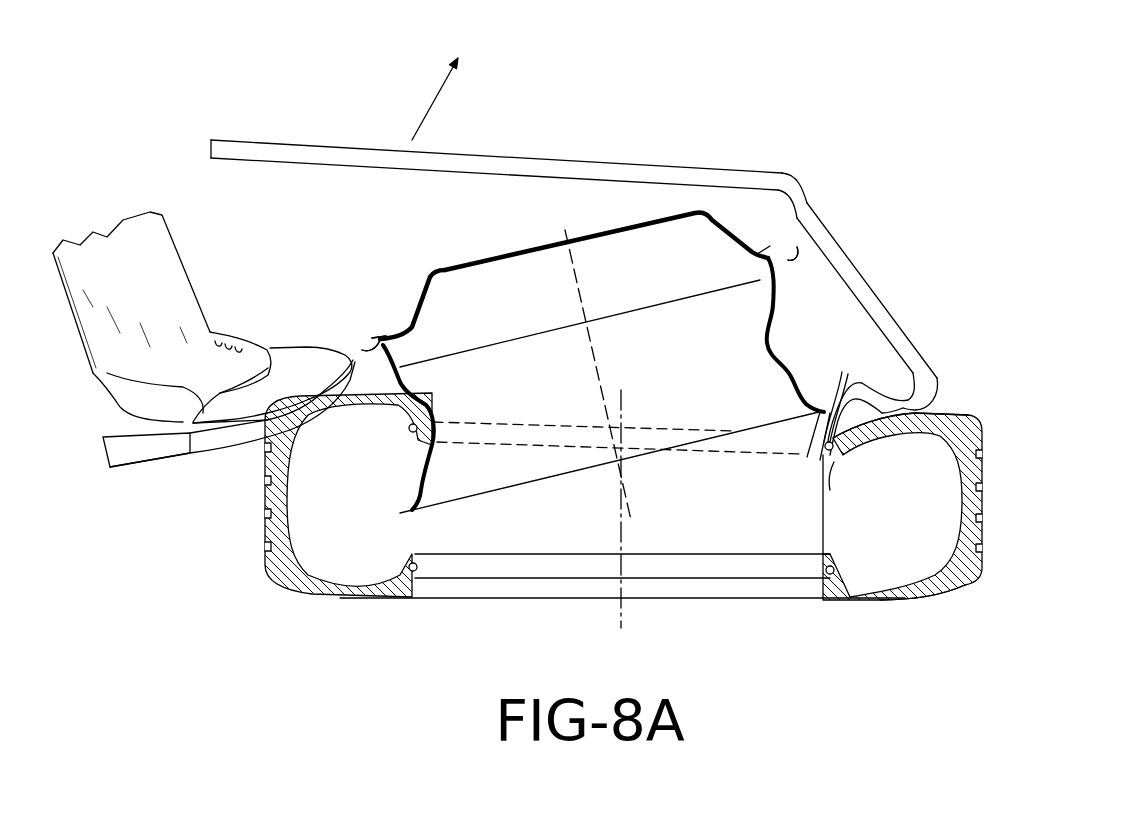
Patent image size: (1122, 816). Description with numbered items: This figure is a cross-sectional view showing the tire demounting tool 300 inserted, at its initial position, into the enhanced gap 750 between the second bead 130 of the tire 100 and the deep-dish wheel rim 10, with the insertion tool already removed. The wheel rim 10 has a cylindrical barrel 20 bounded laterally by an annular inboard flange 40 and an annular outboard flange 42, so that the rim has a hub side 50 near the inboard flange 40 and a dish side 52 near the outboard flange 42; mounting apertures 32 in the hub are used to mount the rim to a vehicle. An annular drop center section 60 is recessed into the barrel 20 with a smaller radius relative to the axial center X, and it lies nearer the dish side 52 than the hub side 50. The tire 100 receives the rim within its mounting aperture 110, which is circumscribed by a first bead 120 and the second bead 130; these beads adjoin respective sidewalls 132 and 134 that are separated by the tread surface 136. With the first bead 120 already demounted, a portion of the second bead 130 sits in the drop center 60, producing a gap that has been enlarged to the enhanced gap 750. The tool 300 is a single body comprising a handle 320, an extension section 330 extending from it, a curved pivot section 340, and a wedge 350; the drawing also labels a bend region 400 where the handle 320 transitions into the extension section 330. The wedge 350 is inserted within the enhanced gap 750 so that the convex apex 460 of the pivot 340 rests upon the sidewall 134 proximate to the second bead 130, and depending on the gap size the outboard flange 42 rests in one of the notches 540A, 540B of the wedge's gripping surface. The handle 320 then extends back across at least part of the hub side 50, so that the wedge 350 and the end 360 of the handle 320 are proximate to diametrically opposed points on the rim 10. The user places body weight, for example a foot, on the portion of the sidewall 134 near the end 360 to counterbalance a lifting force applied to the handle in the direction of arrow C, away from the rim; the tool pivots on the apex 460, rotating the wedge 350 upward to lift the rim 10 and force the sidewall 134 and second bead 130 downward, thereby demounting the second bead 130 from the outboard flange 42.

The deep-dish wheel rim 10 is at (564, 278).
The barrel 20 is at (590, 364).
The mounting apertures 32 is at (447, 264).
The inboard flange 40 is at (372, 349).
The outboard flange 42 is at (410, 502).
The hub side 50 is at (373, 342).
The dish side 52 is at (411, 506).
The drop center section 60 is at (433, 404).
The tire 100 is at (622, 497).
The mounting aperture 110 is at (680, 557).
The first bead 120 is at (416, 568).
The second bead 130 is at (422, 418).
The sidewall 132 is at (898, 597).
The sidewall 134 is at (940, 413).
The tread surface 136 is at (260, 501).
The tire demounting tool 300 is at (615, 250).
The handle 320 is at (540, 160).
The extension section 330 is at (885, 300).
The pivot section 340 is at (947, 395).
The wedge 350 is at (831, 472).
The end of the handle 360 is at (210, 148).
The pedal bend 400 is at (790, 178).
The convex apex 460 is at (925, 411).
The first notch 540A is at (840, 413).
The second notch 540B is at (840, 380).
The enhanced gap 750 is at (856, 427).
The arrow C is at (432, 100).
The axial center X is at (580, 307).